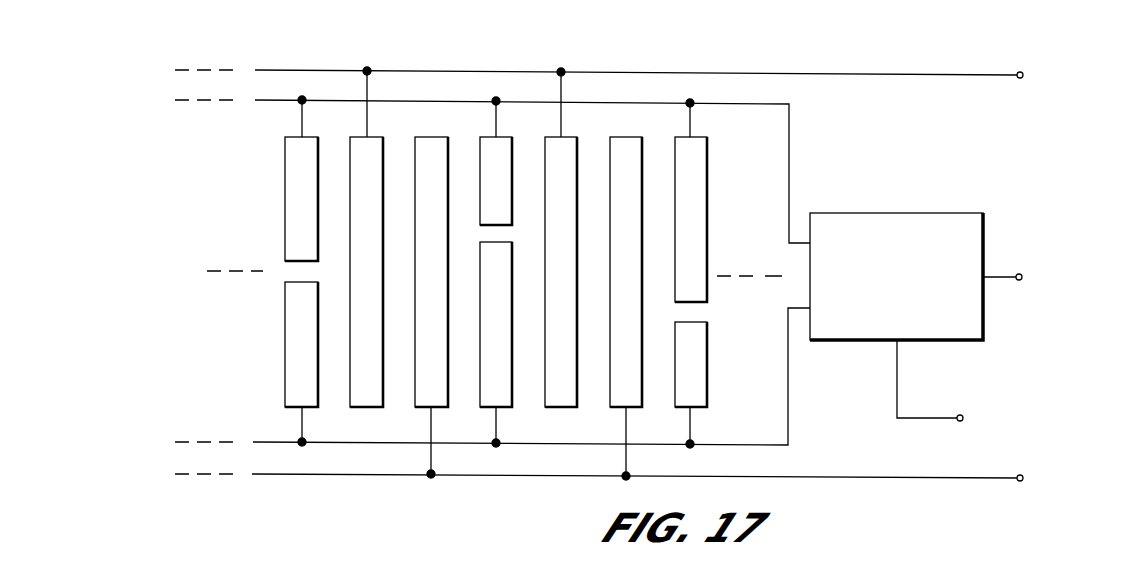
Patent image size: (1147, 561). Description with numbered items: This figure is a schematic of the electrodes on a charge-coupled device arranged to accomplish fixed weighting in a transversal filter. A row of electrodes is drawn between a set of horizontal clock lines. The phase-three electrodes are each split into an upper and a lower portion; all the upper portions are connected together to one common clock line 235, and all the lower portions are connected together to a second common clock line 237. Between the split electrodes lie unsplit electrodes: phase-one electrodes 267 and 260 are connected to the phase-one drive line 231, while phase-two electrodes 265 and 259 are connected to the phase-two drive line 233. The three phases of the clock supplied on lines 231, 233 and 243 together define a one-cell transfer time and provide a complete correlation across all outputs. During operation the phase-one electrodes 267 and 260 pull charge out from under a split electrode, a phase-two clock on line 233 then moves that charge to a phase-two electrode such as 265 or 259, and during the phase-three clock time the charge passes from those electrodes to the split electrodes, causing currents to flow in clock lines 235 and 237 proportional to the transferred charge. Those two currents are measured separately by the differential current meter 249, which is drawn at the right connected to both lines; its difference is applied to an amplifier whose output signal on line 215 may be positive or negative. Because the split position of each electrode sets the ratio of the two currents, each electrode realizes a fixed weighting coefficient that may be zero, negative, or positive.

The phase-one drive line 231 is at (933, 73).
The phase-two drive line 233 is at (990, 477).
The common clock line 235 is at (789, 118).
The common clock line 237 is at (789, 430).
The differential current meter 249 is at (914, 213).
The clock line 243 is at (1010, 272).
The output line 215 is at (935, 418).
The phase-two electrode 265 is at (425, 137).
The phase-one electrode 267 is at (370, 407).
The phase-one electrode 260 is at (562, 137).
The phase-two electrode 259 is at (628, 137).